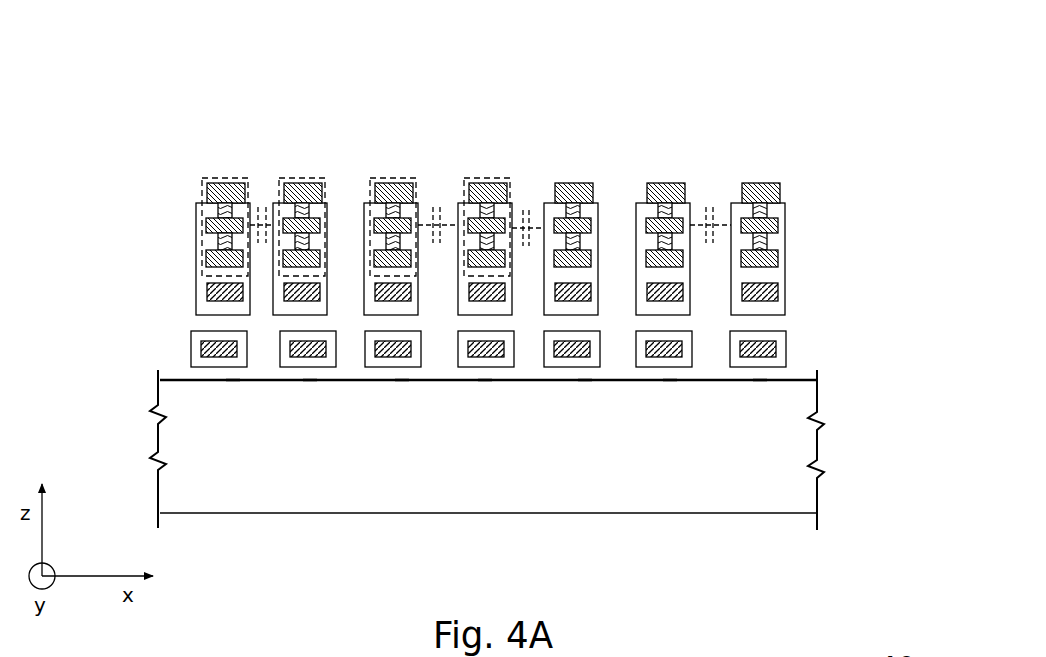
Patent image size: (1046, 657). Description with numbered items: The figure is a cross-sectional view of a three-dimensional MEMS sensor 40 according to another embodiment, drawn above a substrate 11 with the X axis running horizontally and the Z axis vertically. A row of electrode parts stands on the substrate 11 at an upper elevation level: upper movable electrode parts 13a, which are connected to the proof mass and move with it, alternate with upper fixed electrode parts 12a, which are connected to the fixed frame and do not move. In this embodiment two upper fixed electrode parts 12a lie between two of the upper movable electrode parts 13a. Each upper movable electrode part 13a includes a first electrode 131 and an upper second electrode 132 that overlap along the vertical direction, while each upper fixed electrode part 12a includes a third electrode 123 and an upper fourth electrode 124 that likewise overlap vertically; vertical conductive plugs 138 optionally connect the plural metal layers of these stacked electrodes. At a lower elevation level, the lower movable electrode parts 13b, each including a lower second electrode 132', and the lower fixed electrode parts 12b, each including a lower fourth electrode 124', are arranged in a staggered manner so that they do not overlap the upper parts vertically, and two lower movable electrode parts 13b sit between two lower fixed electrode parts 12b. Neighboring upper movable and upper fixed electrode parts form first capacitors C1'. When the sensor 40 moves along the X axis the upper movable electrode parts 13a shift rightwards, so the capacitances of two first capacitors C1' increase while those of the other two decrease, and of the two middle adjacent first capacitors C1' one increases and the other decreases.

The three-dimensional MEMS sensor 40 is at (807, 66).
The substrate 11 is at (193, 444).
The upper fixed electrode part 12a is at (647, 175).
The upper movable electrode part 13a is at (192, 176).
The lower fixed electrode part 12b is at (233, 383).
The lower movable electrode part 13b is at (310, 383).
The third electrode 123 is at (312, 177).
The first electrode 131 is at (206, 242).
The vertical conductive plug 138 is at (216, 213).
The upper fourth electrode 124 is at (407, 249).
The upper second electrode 132 is at (413, 275).
The lower second electrode 132' is at (417, 336).
The lower fourth electrode 124' is at (412, 359).
The first capacitor C1' is at (487, 244).